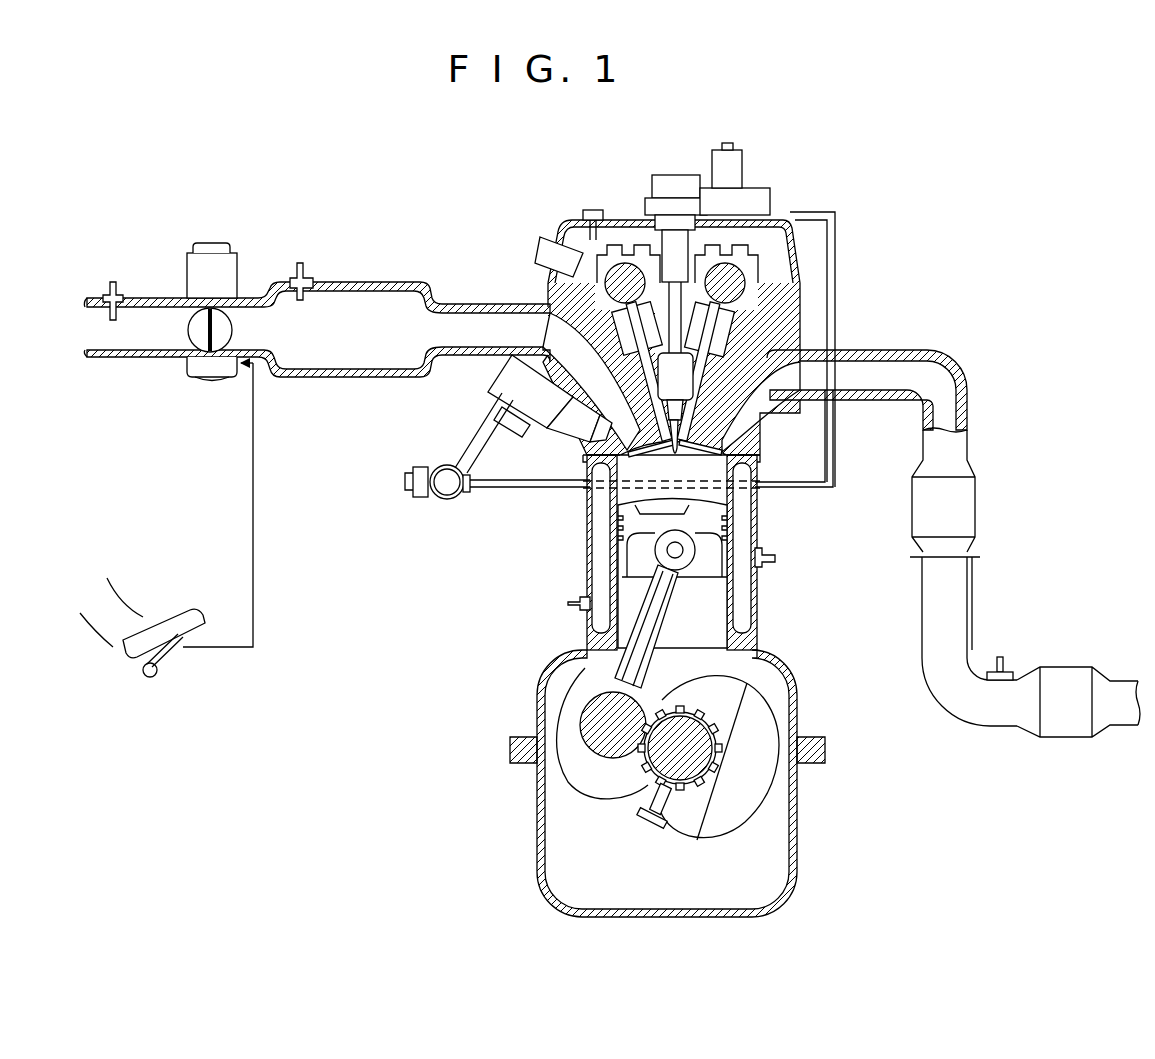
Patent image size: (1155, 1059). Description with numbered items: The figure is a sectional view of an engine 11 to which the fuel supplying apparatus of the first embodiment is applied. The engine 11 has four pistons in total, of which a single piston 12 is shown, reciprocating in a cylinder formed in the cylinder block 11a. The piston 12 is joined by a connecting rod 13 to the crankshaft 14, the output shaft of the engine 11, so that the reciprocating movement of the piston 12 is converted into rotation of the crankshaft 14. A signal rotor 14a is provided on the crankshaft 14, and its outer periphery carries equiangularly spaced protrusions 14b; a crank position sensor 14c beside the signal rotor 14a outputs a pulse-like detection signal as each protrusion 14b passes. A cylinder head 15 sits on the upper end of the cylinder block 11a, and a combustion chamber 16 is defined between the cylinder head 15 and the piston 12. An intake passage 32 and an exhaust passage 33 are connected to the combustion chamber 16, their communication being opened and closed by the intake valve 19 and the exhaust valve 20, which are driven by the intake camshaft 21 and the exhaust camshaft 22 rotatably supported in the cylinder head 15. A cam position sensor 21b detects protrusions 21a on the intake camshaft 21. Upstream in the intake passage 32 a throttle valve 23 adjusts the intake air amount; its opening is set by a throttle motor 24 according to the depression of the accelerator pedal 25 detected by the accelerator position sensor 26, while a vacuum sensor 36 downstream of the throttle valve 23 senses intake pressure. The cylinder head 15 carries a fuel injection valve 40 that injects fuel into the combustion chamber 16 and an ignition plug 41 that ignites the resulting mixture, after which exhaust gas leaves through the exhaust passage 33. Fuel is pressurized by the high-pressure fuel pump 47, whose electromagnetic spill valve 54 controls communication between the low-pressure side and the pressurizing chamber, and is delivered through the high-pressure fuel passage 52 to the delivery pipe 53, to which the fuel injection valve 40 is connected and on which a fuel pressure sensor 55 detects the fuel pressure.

The engine 11 is at (912, 188).
The cylinder block 11a is at (760, 602).
The piston 12 is at (690, 580).
The connecting rod 13 is at (655, 690).
The crankshaft 14 is at (713, 778).
The signal rotor 14a is at (683, 792).
The protrusions 14b is at (700, 773).
The crank position sensor 14c is at (638, 813).
The cylinder head 15 is at (770, 424).
The combustion chamber 16 is at (612, 490).
The intake valve 19 is at (579, 460).
The exhaust valve 20 is at (756, 488).
The intake camshaft 21 is at (626, 262).
The protrusions 21a is at (560, 255).
The cam position sensor 21b is at (592, 210).
The exhaust camshaft 22 is at (757, 255).
The throttle valve 23 is at (233, 330).
The throttle motor 24 is at (237, 265).
The accelerator pedal 25 is at (175, 655).
The accelerator position sensor 26 is at (210, 380).
The intake passage 32 is at (380, 350).
The exhaust passage 33 is at (871, 375).
The vacuum sensor 36 is at (303, 265).
The fuel injection valve 40 is at (497, 375).
The ignition plug 41 is at (669, 452).
The high-pressure fuel pump 47 is at (768, 190).
The high-pressure fuel passage 52 is at (497, 490).
The delivery pipe 53 is at (445, 498).
The electromagnetic spill valve 54 is at (712, 165).
The fuel pressure sensor 55 is at (408, 485).